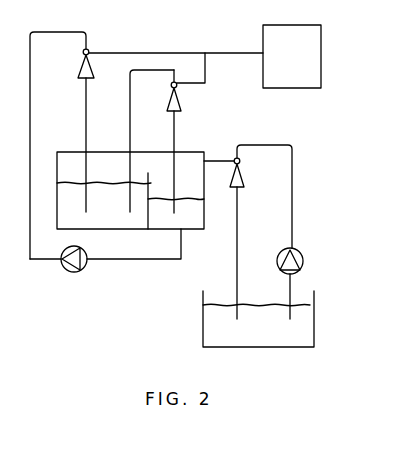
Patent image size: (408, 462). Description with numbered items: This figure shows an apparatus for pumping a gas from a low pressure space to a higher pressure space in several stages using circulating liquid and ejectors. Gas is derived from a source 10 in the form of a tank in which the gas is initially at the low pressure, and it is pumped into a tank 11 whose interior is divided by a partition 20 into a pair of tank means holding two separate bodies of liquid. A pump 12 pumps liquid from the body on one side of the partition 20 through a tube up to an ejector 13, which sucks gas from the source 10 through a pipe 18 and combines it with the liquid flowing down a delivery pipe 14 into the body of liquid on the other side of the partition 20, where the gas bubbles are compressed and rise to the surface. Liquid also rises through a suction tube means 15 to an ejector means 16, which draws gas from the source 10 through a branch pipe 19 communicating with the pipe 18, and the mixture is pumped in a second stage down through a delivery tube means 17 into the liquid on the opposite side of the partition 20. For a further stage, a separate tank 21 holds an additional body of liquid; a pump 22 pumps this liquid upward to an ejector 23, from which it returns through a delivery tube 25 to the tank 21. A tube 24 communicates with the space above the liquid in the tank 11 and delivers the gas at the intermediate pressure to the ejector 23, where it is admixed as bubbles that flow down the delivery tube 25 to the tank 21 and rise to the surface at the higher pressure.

The source 10 is at (263, 37).
The tank 11 is at (204, 218).
The pump 12 is at (73, 272).
The ejector 13 is at (88, 50).
The delivery pipe 14 is at (87, 130).
The suction tube means 15 is at (131, 130).
The ejector means 16 is at (179, 100).
The delivery tube means 17 is at (175, 130).
The pipe 18 is at (155, 52).
The branch pipe 19 is at (205, 72).
The partition 20 is at (148, 213).
The separate tank 21 is at (314, 325).
The pump 22 is at (303, 261).
The ejector 23 is at (240, 161).
The tube 24 is at (221, 158).
The delivery tube 25 is at (238, 218).